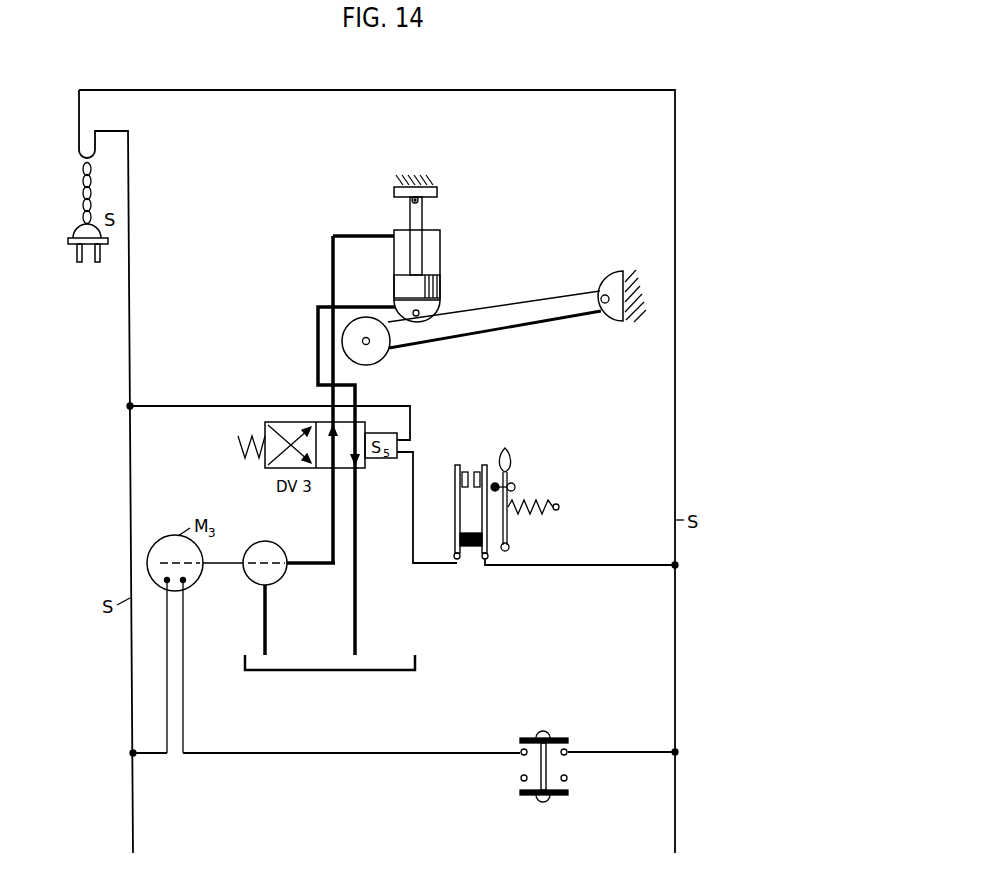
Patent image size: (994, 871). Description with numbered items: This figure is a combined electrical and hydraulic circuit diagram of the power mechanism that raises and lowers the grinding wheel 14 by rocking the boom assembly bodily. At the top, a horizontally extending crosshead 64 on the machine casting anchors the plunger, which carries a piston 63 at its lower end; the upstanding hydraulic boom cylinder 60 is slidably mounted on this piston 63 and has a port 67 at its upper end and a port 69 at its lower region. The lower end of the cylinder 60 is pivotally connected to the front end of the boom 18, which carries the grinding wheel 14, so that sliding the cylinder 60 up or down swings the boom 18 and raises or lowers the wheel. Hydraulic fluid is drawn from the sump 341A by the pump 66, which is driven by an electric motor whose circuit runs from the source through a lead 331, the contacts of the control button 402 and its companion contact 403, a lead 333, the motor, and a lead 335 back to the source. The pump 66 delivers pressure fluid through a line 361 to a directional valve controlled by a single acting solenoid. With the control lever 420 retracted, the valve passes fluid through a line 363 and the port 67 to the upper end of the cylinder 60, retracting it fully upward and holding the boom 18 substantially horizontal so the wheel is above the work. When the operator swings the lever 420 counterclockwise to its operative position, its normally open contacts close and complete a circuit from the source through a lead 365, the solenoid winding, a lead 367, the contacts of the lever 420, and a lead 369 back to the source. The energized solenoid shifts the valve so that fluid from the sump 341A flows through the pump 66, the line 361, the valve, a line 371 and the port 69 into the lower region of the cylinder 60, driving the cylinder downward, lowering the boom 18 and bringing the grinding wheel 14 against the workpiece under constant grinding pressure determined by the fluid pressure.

The grinding wheel 14 is at (378, 357).
The boom 18 is at (490, 313).
The hydraulic boom cylinder 60 is at (441, 235).
The piston 63 is at (441, 285).
The crosshead 64 is at (437, 190).
The pump 66 is at (274, 548).
The port 67 is at (392, 232).
The port 69 is at (396, 306).
The lead 331 is at (613, 752).
The lead 333 is at (325, 753).
The lead 335 is at (168, 704).
The sump 341A is at (368, 672).
The line 361 is at (333, 512).
The line 363 is at (333, 268).
The lead 365 is at (190, 406).
The lead 367 is at (412, 507).
The lead 369 is at (557, 566).
The line 371 is at (318, 336).
The control button 402 is at (545, 735).
The switch contact 403 is at (550, 800).
The control lever 420 is at (512, 455).